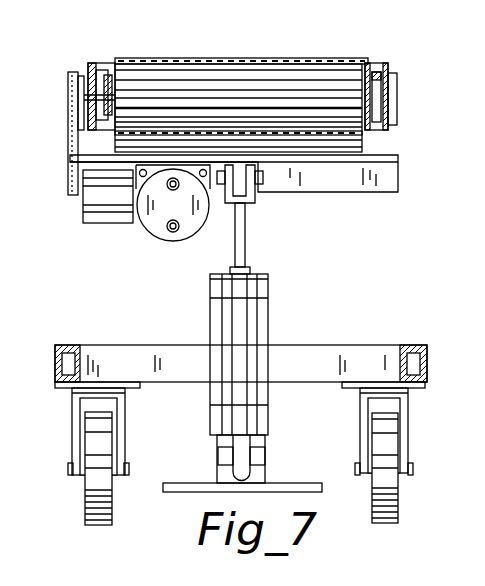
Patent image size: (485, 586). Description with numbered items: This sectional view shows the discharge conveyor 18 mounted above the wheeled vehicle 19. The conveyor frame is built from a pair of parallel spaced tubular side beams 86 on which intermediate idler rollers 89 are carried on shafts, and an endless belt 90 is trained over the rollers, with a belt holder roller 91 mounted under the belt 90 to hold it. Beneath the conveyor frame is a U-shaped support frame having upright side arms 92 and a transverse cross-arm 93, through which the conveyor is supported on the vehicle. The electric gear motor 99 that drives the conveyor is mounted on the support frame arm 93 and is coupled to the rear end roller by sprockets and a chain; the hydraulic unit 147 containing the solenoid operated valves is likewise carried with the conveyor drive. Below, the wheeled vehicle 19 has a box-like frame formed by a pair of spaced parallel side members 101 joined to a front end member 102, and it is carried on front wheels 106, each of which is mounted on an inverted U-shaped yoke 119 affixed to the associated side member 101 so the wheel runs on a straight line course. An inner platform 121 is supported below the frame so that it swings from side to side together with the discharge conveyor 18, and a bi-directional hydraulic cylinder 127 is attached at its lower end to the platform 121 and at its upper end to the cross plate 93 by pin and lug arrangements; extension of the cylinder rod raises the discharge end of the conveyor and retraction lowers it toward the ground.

The discharge conveyor 18 is at (314, 20).
The endless belt 90 is at (229, 62).
The side beams 86 is at (377, 64).
The upright side arms 92 is at (399, 113).
The transverse cross-arm 93 is at (85, 165).
The electric gear motor 99 is at (113, 193).
The belt holder roller 91 is at (322, 140).
The intermediate idler rollers 89 is at (300, 110).
The hydraulic unit 147 is at (170, 243).
The bi-directional hydraulic cylinder 127 is at (256, 326).
The inner platform 121 is at (286, 483).
The front end member 102 is at (360, 354).
The side members 101 is at (427, 345).
The wheeled vehicle 19 is at (38, 371).
The inverted U-shaped yoke 119 is at (125, 419).
The front wheels 106 is at (88, 492).